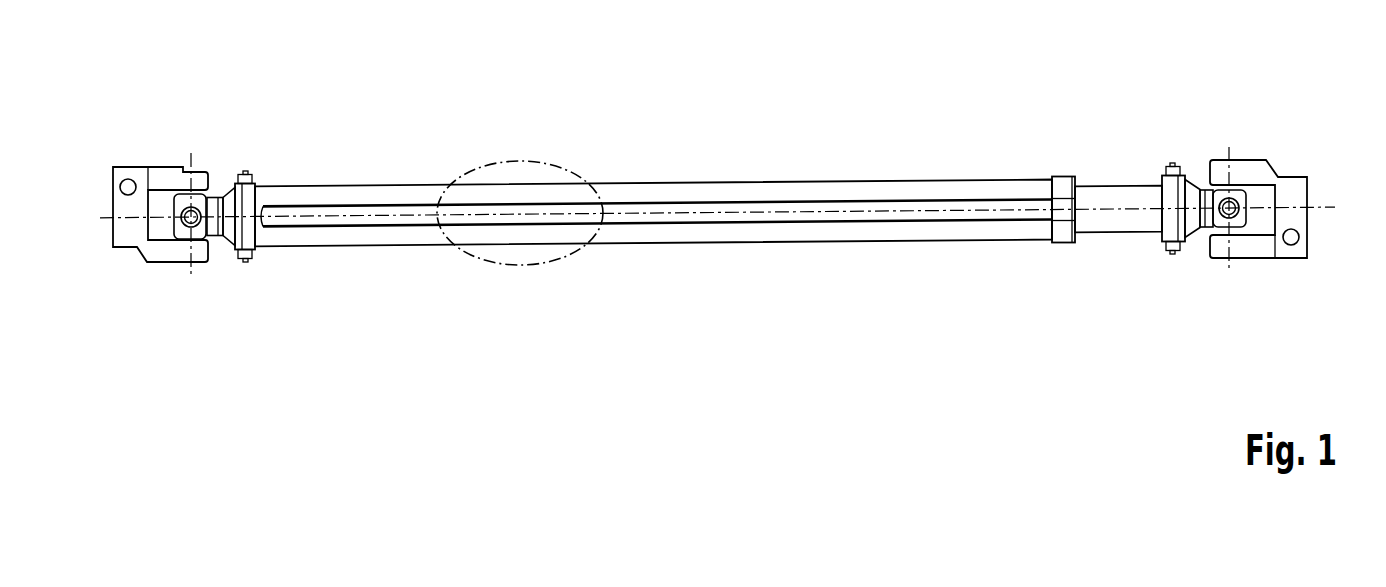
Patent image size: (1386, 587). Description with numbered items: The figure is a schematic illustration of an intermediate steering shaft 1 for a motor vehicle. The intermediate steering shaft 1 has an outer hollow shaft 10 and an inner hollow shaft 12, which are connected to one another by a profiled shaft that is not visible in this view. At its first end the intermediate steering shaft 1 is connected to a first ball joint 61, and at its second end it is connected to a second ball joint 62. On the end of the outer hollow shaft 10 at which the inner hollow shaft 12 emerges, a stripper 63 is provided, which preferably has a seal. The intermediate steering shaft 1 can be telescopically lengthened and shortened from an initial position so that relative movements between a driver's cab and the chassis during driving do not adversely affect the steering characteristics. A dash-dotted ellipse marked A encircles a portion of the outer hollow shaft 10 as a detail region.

The intermediate steering shaft 1 is at (1005, 98).
The outer hollow shaft 10 is at (729, 190).
The inner hollow shaft 12 is at (1117, 195).
The first ball joint 61 is at (167, 178).
The second ball joint 62 is at (1252, 168).
The stripper 63 is at (1062, 185).
The detail region A is at (533, 162).